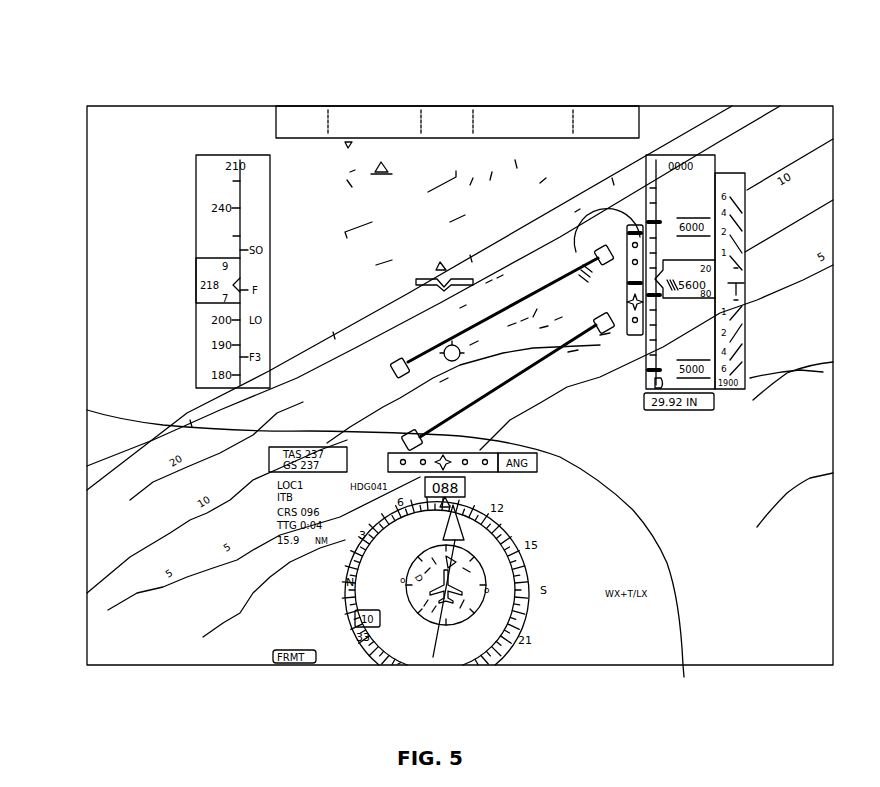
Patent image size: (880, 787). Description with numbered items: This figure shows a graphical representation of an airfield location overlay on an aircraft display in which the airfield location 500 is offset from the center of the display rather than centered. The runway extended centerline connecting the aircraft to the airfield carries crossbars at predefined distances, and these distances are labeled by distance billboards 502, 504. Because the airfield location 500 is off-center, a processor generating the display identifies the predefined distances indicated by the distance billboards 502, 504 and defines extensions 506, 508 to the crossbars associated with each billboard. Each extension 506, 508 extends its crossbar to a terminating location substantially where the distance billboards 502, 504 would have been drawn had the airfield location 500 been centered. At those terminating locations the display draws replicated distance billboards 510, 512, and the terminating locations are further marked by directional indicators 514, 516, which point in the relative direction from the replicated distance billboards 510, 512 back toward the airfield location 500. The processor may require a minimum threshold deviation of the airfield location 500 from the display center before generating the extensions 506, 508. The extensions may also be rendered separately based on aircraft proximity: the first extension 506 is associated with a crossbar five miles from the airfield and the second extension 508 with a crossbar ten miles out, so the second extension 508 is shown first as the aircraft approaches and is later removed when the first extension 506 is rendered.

The airfield location 500 is at (577, 242).
The distance billboard 502 is at (600, 257).
The distance billboard 504 is at (608, 335).
The first extension 506 is at (568, 345).
The second extension 508 is at (538, 302).
The replicated distance billboard 510 is at (87, 410).
The replicated distance billboard 512 is at (87, 466).
The directional indicator 514 is at (413, 357).
The directional indicator 516 is at (751, 535).